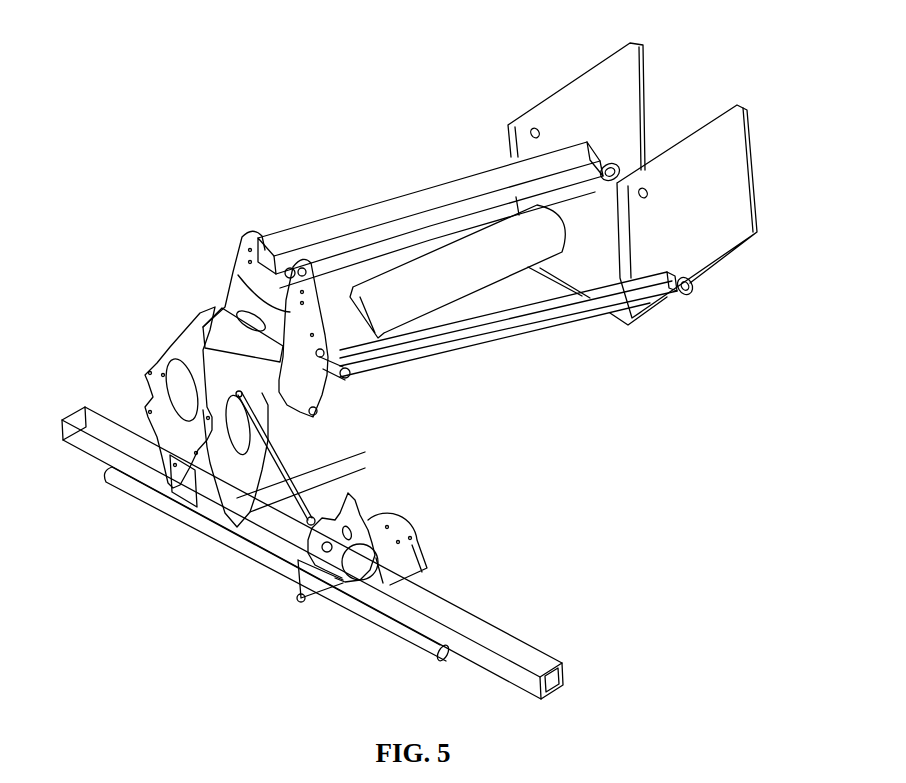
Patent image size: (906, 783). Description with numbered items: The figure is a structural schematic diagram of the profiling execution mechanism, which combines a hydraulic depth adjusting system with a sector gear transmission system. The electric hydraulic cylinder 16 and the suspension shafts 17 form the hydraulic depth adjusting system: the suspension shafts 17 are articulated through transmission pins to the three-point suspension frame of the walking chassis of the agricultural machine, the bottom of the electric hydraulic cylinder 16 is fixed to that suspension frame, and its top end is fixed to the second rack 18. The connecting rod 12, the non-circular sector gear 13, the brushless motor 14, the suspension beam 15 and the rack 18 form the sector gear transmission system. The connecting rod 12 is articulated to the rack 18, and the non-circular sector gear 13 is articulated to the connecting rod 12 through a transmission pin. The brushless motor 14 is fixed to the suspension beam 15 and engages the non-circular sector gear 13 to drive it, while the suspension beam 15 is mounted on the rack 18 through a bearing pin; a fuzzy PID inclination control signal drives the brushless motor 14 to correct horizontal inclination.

The fifth connecting rod 12 is at (302, 492).
The non-circular sector gear 13 is at (355, 520).
The brushless motor 14 is at (418, 545).
The suspension beam 15 is at (465, 620).
The electric hydraulic cylinder 16 is at (470, 318).
The suspension shaft 17 is at (517, 336).
The second rack 18 is at (193, 330).